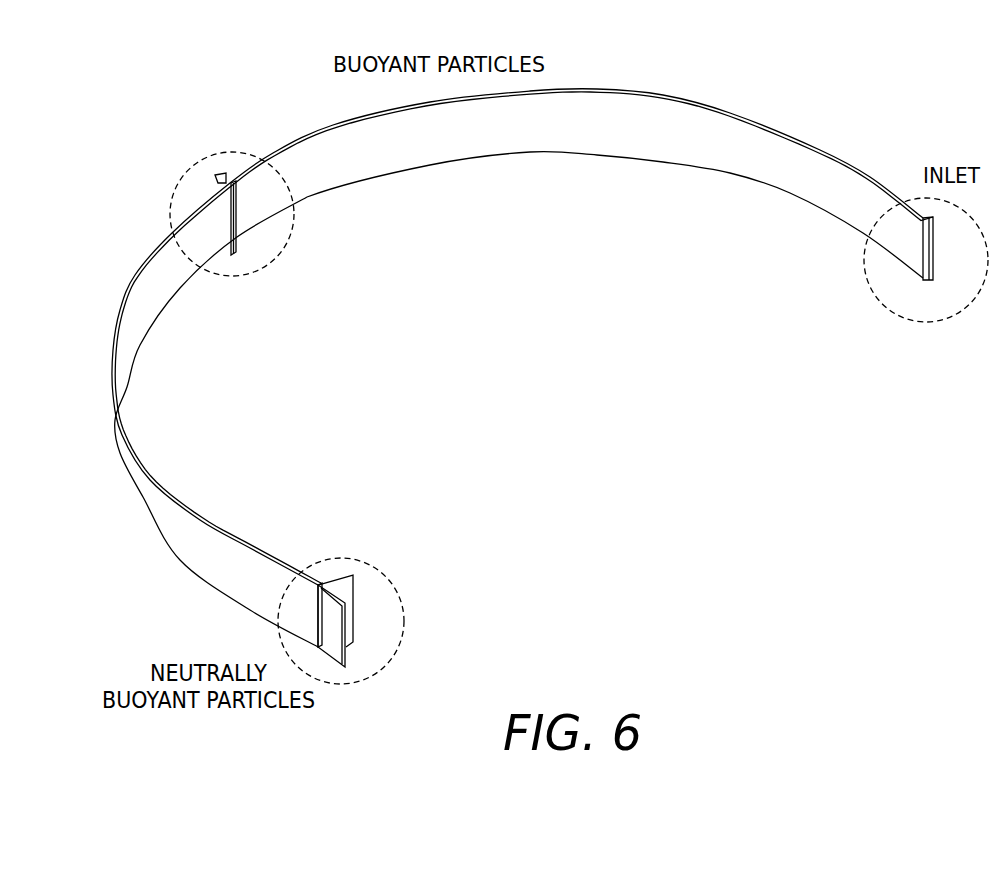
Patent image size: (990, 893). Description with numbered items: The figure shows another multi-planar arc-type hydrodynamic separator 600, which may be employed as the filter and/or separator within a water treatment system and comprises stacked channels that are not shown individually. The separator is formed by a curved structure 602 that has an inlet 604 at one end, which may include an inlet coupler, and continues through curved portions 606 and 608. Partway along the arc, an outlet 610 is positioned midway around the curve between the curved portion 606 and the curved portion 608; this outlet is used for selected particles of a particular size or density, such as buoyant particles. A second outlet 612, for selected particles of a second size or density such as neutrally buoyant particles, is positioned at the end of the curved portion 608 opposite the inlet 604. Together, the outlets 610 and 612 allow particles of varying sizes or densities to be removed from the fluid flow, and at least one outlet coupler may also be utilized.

The multi-planar arc-type hydrodynamic separator 600 is at (214, 70).
The curved structure 602 is at (649, 92).
The inlet 604 is at (875, 291).
The curved portion 606 is at (535, 155).
The curved portion 608 is at (150, 308).
The outlet 610 is at (290, 237).
The second outlet 612 is at (397, 593).